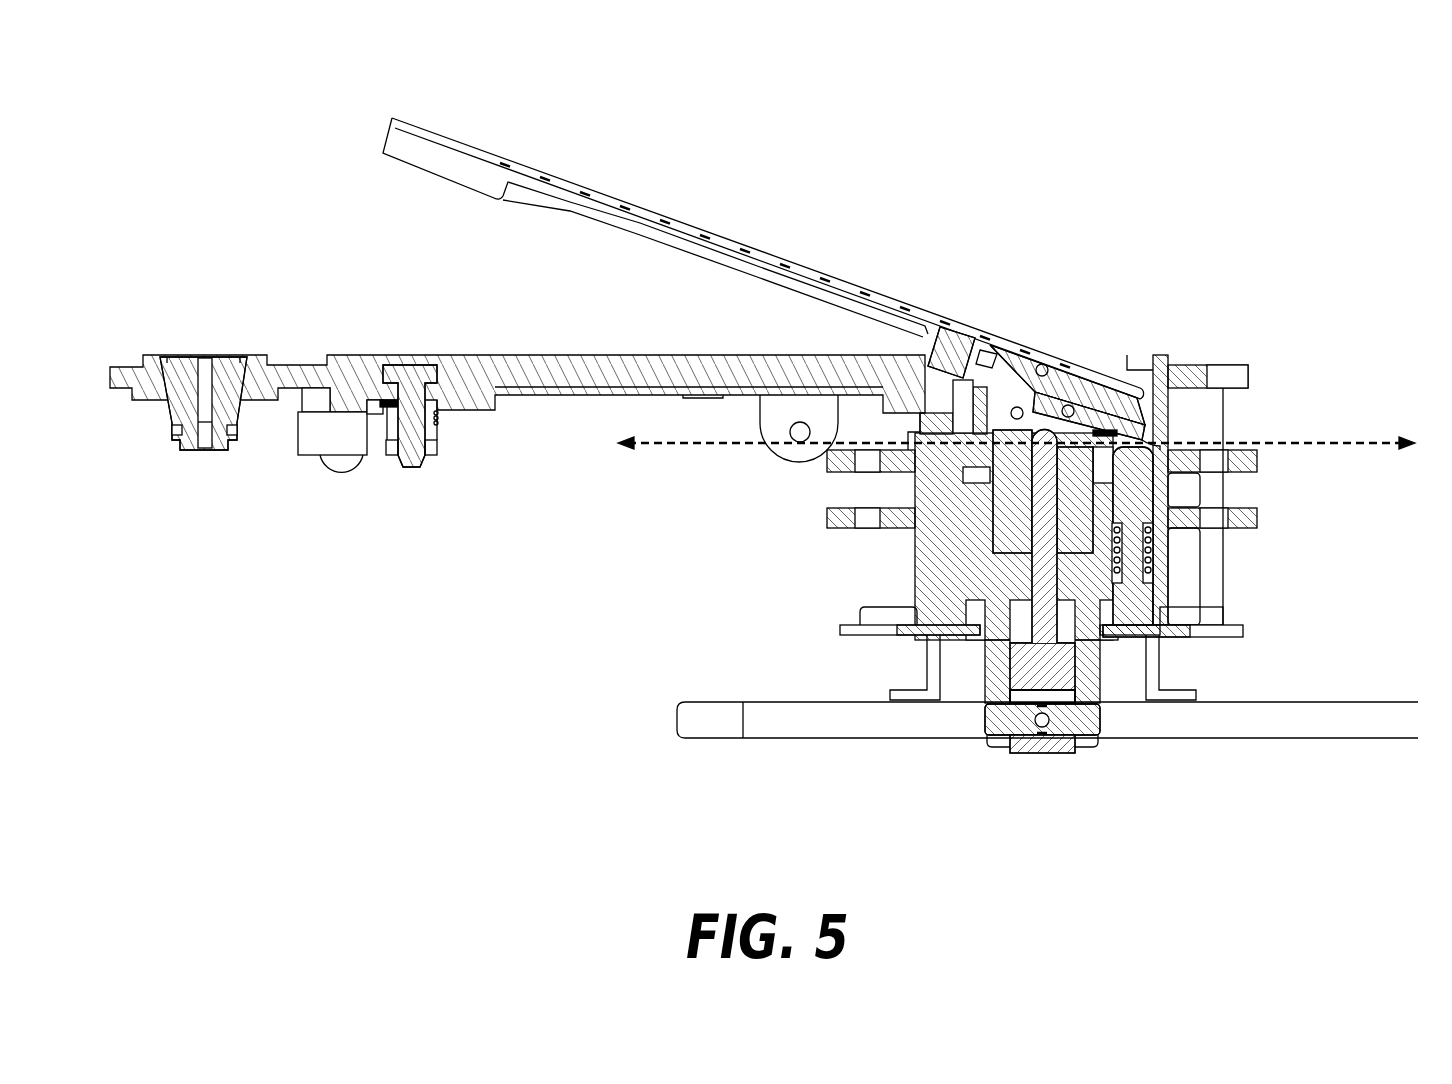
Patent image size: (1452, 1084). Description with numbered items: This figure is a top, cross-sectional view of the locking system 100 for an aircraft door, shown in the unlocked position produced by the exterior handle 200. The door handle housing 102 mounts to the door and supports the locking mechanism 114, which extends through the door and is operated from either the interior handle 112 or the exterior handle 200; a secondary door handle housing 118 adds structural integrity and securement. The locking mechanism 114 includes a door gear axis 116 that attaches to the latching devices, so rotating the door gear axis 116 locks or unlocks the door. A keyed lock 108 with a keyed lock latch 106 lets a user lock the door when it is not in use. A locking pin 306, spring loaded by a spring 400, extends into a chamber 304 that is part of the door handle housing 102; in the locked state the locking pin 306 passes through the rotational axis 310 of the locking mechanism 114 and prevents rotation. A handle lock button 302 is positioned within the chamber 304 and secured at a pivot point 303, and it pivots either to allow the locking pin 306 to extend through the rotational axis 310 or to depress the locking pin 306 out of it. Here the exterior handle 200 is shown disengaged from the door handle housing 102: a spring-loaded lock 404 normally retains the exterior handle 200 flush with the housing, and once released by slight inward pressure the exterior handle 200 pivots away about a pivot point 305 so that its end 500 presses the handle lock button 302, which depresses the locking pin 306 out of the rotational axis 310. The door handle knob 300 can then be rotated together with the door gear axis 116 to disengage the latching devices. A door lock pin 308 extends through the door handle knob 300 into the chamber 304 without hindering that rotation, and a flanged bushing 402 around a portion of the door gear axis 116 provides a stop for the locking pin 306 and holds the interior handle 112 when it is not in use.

The locking system 100 is at (160, 142).
The door handle housing 102 is at (598, 395).
The keyed lock latch 106 is at (258, 433).
The keyed lock 108 is at (183, 360).
The interior handle 112 is at (688, 720).
The locking mechanism 114 is at (1316, 521).
The door gear axis 116 is at (847, 515).
The secondary door handle housing 118 is at (1228, 630).
The exterior handle 200 is at (655, 212).
The door handle knob 300 is at (1010, 508).
The handle lock button 302 is at (1107, 420).
The pivot point 303 is at (1066, 408).
The chamber 304 is at (998, 398).
The pivot point 305 is at (1041, 366).
The locking pin 306 is at (1138, 568).
The door lock pin 308 is at (1042, 577).
The rotational axis 310 is at (1305, 443).
The spring 400 is at (1147, 443).
The flanged bushing 402 is at (1170, 700).
The spring-loaded lock 404 is at (400, 373).
The end 500 is at (1142, 396).